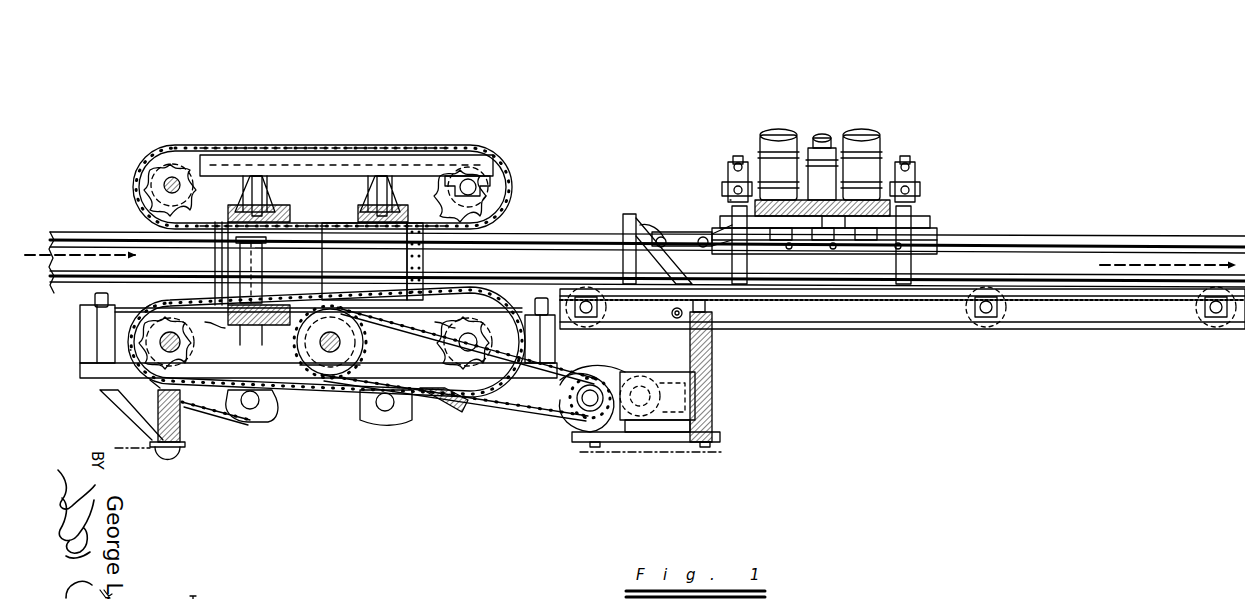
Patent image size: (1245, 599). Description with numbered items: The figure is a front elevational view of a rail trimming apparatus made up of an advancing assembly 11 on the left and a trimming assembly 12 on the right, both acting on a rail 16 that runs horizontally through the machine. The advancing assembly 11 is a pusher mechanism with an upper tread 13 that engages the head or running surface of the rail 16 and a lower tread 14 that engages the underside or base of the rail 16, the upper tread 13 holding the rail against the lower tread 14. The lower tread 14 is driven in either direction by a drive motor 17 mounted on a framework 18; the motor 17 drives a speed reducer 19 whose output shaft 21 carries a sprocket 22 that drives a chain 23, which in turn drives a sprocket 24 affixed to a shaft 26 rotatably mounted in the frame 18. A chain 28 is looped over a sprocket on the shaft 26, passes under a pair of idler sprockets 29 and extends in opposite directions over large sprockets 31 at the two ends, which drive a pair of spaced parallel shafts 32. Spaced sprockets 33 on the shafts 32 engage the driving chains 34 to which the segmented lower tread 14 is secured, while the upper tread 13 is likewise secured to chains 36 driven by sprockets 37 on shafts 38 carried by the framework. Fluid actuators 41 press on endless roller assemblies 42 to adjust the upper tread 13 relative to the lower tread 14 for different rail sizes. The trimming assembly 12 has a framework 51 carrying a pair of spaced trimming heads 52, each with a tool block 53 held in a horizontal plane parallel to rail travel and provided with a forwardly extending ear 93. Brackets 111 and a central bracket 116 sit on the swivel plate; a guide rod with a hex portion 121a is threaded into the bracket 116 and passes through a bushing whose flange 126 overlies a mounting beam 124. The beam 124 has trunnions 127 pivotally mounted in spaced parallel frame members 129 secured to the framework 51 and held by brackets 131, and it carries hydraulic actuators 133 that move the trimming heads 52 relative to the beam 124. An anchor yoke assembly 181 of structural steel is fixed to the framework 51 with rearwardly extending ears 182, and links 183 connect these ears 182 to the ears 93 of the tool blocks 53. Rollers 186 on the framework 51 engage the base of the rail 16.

The advancing assembly 11 is at (358, 97).
The trimming assembly 12 is at (858, 90).
The upper tread 13 is at (507, 176).
The lower tread 14 is at (300, 392).
The rail 16 is at (580, 248).
The drive motor 17 is at (640, 372).
The framework 18 is at (652, 440).
The speed reducer 19 is at (600, 372).
The output shaft 21 is at (590, 408).
The sprocket 22 is at (582, 402).
The chain 23 is at (560, 378).
The sprocket 24 is at (355, 350).
The shaft 26 is at (322, 330).
The chain 28 is at (182, 404).
The idler sprockets 29 is at (248, 412).
The large sprockets 31 is at (103, 300).
The shafts 32 is at (170, 342).
The sprockets 33 is at (255, 368).
The sprocket driving chains 34 is at (172, 308).
The chains 36 is at (260, 147).
The sprockets 37 is at (452, 190).
The shafts 38 is at (228, 195).
The fluid actuators 41 is at (245, 258).
The endless roller assemblies 42 is at (284, 305).
The framework 51 is at (880, 308).
The trimming heads 52 is at (938, 227).
The tool block 53 is at (805, 245).
The ear 93 is at (716, 236).
The brackets 111 is at (780, 245).
The bracket 116 is at (826, 240).
The hex portion 121a is at (818, 138).
The mounting beam 124 is at (846, 230).
The flange 126 is at (846, 208).
The trunnions 127 is at (726, 182).
The frame members 129 is at (735, 264).
The brackets 131 is at (732, 165).
The hydraulic actuators 133 is at (778, 138).
The anchor yoke assembly 181 is at (641, 210).
The ears 182 is at (652, 226).
The links 183 is at (676, 238).
The rollers 186 is at (985, 330).